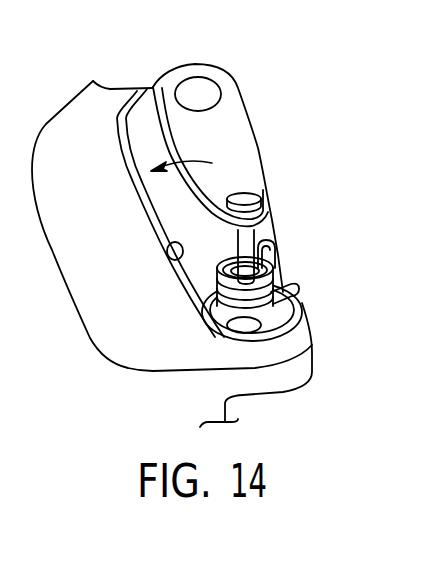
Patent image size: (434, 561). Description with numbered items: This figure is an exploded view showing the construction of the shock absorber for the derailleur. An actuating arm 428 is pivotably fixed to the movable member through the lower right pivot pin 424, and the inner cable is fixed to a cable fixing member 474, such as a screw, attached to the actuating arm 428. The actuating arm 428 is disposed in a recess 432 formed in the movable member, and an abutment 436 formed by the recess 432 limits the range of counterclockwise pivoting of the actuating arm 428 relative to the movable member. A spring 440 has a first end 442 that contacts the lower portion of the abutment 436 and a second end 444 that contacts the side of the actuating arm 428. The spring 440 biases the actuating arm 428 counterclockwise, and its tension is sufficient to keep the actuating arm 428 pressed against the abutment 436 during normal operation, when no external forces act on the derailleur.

The cable fixing member 474 is at (201, 90).
The actuating arm 428 is at (240, 137).
The lower right pivot pin 424 is at (248, 197).
The second end 444 is at (283, 274).
The spring 440 is at (272, 288).
The first end 442 is at (297, 294).
The abutment 436 is at (168, 267).
The recess 432 is at (212, 251).